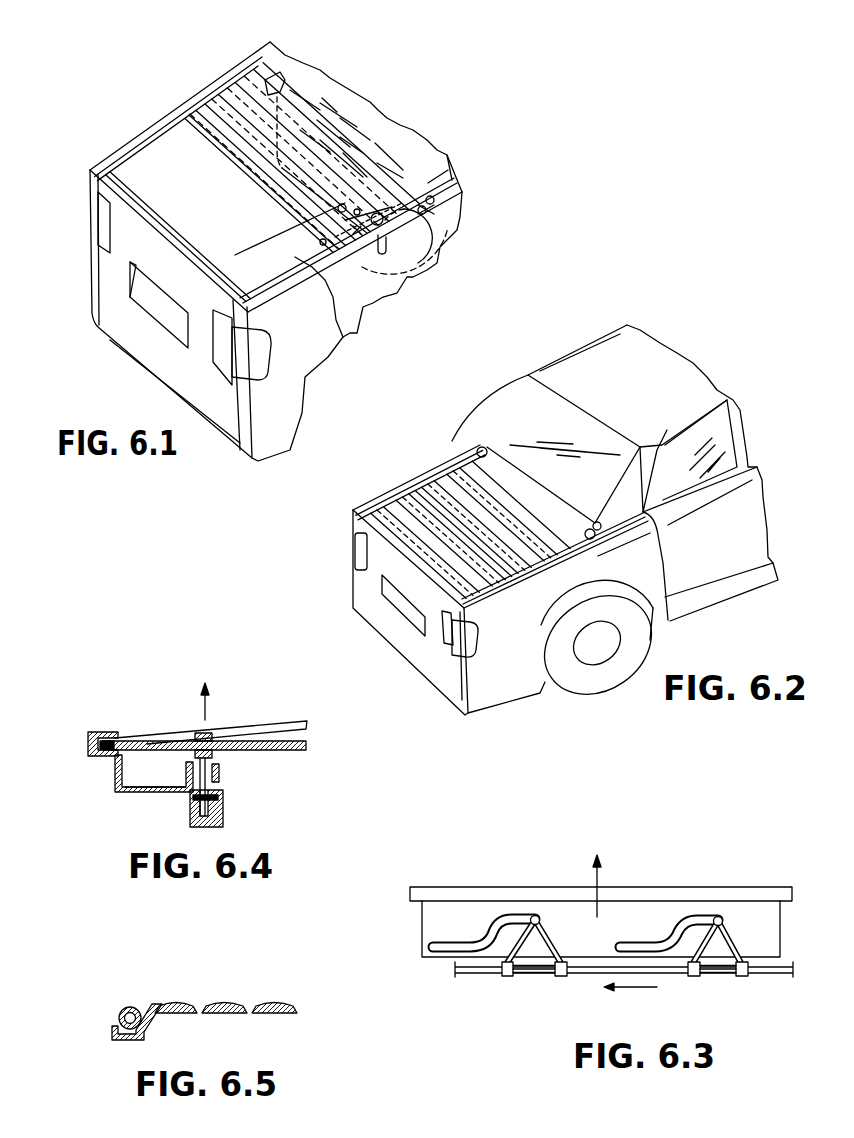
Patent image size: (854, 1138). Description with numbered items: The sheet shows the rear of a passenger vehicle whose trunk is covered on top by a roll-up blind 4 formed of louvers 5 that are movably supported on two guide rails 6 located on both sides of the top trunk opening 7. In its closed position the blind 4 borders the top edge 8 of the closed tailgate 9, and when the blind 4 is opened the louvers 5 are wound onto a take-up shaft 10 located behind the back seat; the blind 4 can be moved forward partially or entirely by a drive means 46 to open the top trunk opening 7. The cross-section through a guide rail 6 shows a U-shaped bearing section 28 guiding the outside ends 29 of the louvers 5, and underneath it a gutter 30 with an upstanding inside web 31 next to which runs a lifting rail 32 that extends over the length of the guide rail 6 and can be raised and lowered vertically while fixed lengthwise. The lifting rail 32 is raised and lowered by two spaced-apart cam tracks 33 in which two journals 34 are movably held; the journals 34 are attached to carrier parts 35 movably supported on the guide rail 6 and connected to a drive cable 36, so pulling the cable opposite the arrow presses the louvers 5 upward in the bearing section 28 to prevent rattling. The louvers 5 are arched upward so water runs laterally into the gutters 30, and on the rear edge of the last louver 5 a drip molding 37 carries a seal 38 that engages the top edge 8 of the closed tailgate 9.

In FIG. 6.1, the roll-up blind 4 is at (238, 141).
In FIG. 6.2, the roll-up blind 4 is at (460, 503).
In FIG. 6.2, the louvers 5 is at (430, 472).
In FIG. 6.4, the louvers 5 is at (283, 720).
In FIG. 6.5, the louvers 5 is at (225, 1005).
In FIG. 6.1, the guide rails 6 is at (143, 153).
In FIG. 6.2, the guide rails 6 is at (363, 504).
In FIG. 6.4, the guide rails 6 is at (117, 771).
In FIG. 6.1, the top trunk opening 7 is at (209, 228).
In FIG. 6.1, the top edge 8 is at (135, 227).
In FIG. 6.1, the tailgate 9 is at (120, 265).
In FIG. 6.1, the take-up shaft 10 is at (450, 154).
In FIG. 6.4, the U-shaped bearing section 28 is at (90, 748).
In FIG. 6.4, the outside ends 29 is at (113, 740).
In FIG. 6.4, the gutter 30 is at (153, 790).
In FIG. 6.4, the inside web 31 is at (187, 770).
In FIG. 6.4, the lifting rail 32 is at (213, 777).
In FIG. 6.3, the lifting rail 32 is at (623, 917).
In FIG. 6.3, the cam tracks 33 is at (500, 917).
In FIG. 6.3, the journals 34 is at (535, 916).
In FIG. 6.3, the carrier parts 35 is at (523, 947).
In FIG. 6.3, the drive cable 36 is at (668, 973).
In FIG. 6.5, the drip molding 37 is at (152, 1023).
In FIG. 6.5, the seal 38 is at (133, 1008).
In FIG. 6.1, the drive means 46 is at (410, 277).